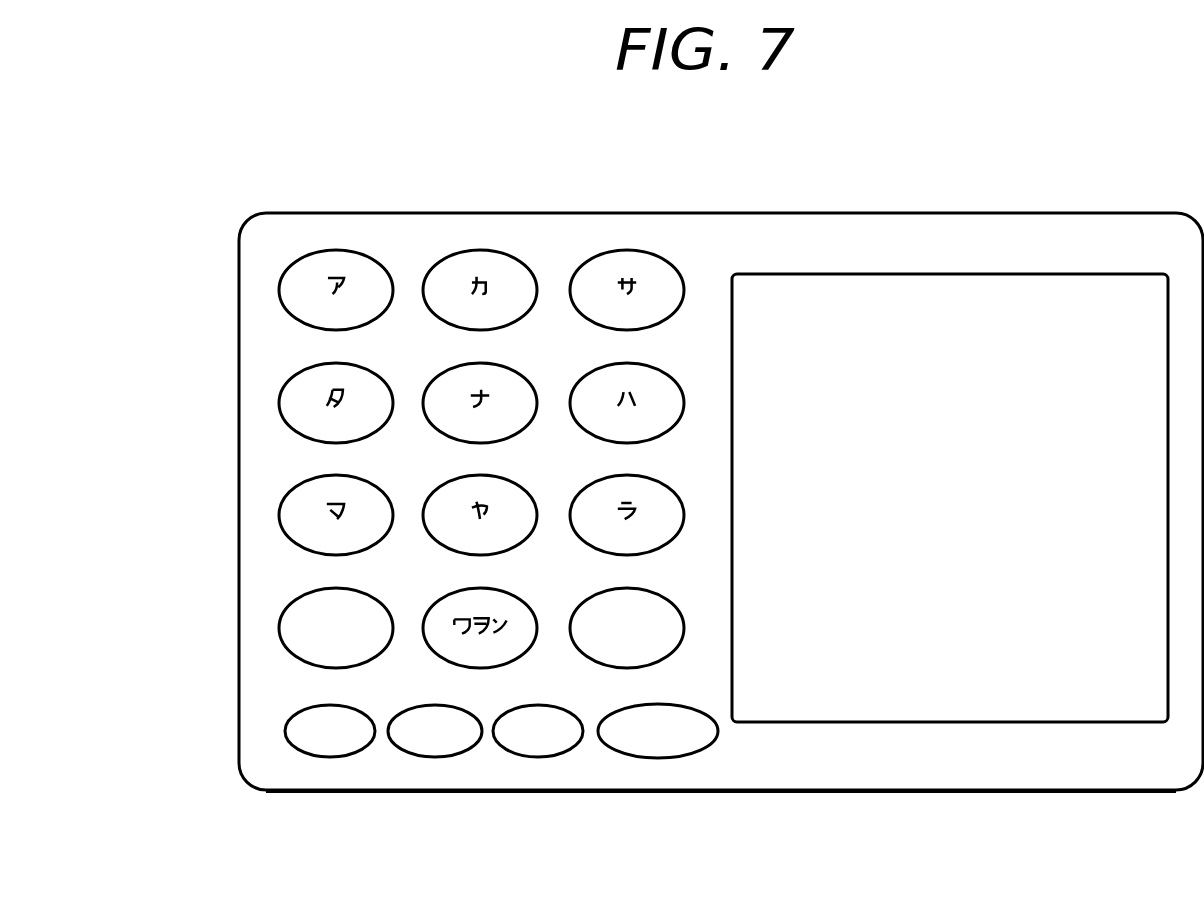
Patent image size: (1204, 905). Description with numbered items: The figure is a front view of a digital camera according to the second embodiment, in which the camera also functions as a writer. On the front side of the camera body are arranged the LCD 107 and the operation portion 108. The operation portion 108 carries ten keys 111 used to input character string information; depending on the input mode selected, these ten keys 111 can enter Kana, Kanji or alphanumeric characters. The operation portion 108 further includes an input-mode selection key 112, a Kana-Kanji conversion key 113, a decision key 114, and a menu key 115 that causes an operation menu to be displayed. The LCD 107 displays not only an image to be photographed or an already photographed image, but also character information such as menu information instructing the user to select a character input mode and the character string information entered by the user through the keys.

The LCD 107 is at (908, 292).
The operation portion 108 is at (432, 232).
The ten keys 111 is at (218, 635).
The input-mode selection key 112 is at (328, 748).
The Kana-Kanji conversion key 113 is at (435, 747).
The decision key 114 is at (535, 750).
The menu key 115 is at (663, 750).